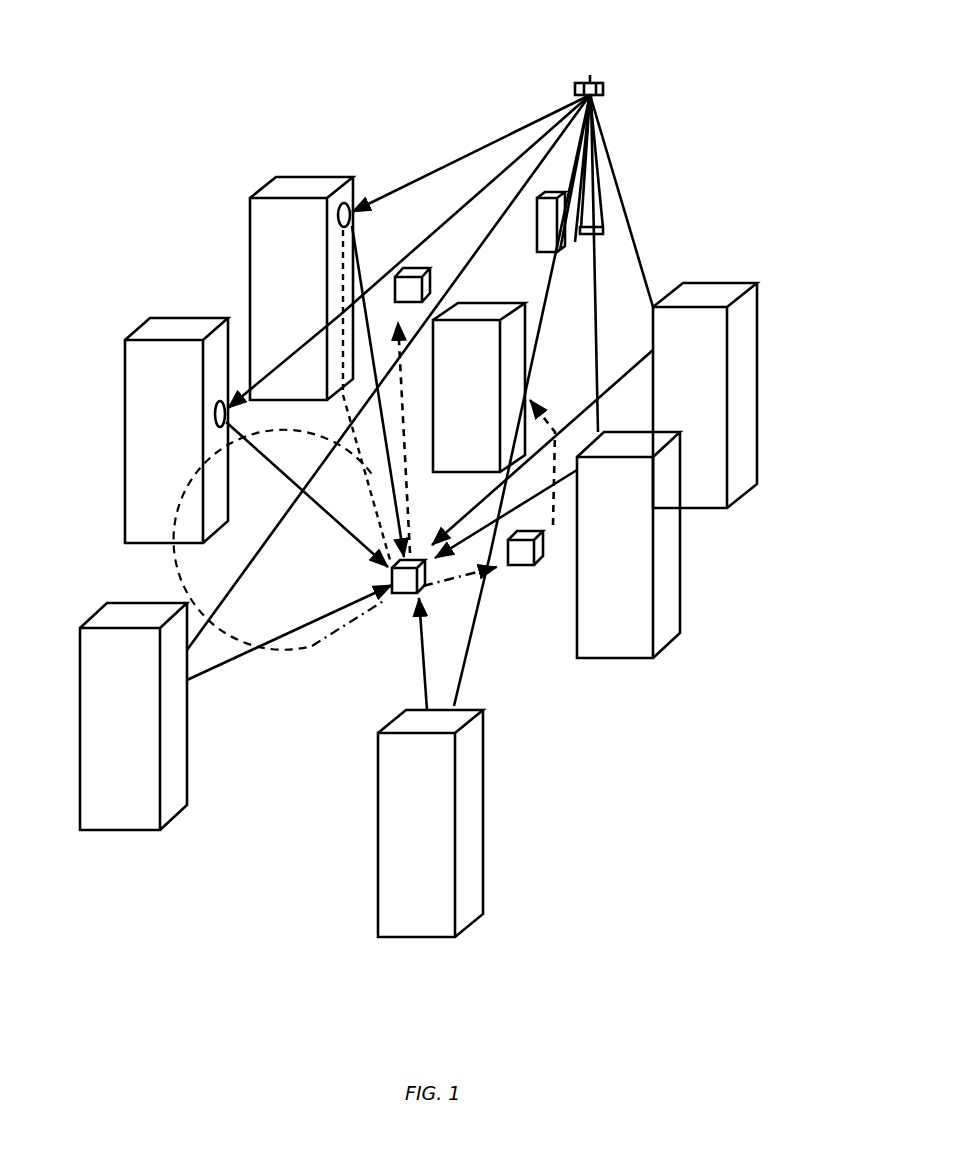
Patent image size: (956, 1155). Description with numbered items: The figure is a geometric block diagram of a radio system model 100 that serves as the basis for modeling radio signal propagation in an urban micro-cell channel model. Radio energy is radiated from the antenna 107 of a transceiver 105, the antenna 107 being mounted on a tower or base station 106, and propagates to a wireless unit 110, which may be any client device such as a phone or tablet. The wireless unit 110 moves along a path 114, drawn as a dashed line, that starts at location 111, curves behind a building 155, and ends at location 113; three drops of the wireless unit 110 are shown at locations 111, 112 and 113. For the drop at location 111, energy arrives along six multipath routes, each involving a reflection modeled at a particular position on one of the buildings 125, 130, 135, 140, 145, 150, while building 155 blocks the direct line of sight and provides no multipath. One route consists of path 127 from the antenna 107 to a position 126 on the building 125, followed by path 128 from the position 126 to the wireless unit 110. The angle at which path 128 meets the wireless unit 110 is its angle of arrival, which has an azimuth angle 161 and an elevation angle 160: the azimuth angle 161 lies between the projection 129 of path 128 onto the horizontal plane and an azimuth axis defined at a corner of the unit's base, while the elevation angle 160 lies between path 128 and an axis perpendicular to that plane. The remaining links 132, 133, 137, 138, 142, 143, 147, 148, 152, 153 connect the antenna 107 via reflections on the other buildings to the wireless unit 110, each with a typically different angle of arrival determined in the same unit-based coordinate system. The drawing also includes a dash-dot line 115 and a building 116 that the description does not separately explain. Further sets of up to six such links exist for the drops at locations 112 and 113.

The radio system model 100 is at (276, 40).
The transceiver 105 is at (547, 237).
The tower or base station 106 is at (600, 180).
The antenna 107 is at (606, 88).
The wireless unit 110 is at (407, 270).
The wireless drop at first location 111 is at (460, 591).
The wireless drop 112 is at (513, 568).
The wireless drop at end location 113 is at (418, 273).
The path 114 is at (560, 416).
The movement path 115 is at (302, 656).
The building 116 is at (412, 390).
The building 125 is at (290, 190).
The position on building 126 is at (357, 190).
The path 127 is at (458, 152).
The path 128 is at (337, 318).
The projection 129 is at (352, 400).
The building 130 is at (162, 320).
The link path 132 is at (308, 342).
The link path 133 is at (248, 447).
The building 135 is at (125, 620).
The link path 137 is at (232, 593).
The link path 138 is at (272, 642).
The building 140 is at (483, 775).
The link path 142 is at (468, 648).
The link path 143 is at (419, 666).
The building 145 is at (685, 578).
The link path 147 is at (597, 328).
The link path 148 is at (535, 505).
The building 150 is at (720, 292).
The link path 152 is at (637, 238).
The link path 153 is at (640, 368).
The building 155 is at (524, 380).
The elevation angle 160 is at (403, 428).
The azimuth angle 161 is at (294, 554).